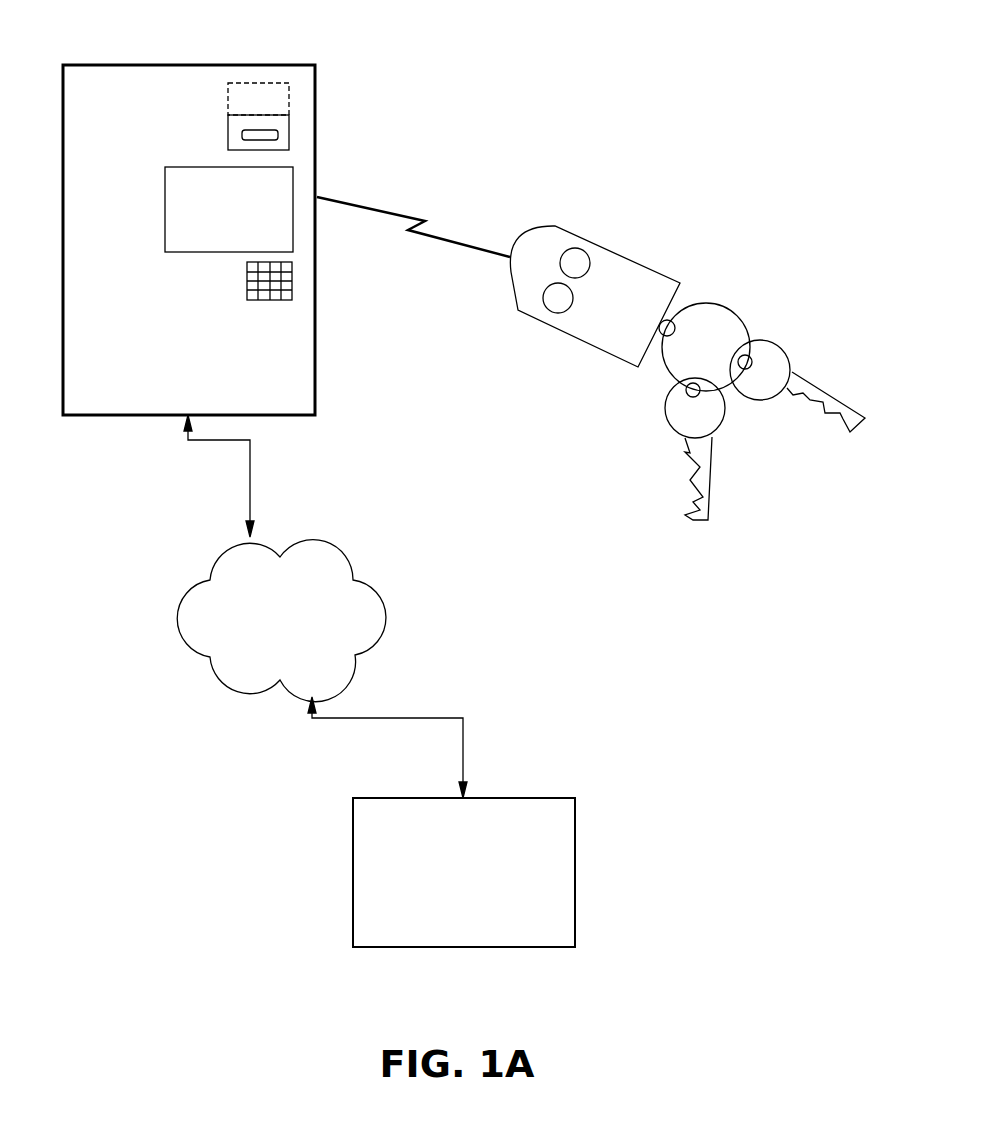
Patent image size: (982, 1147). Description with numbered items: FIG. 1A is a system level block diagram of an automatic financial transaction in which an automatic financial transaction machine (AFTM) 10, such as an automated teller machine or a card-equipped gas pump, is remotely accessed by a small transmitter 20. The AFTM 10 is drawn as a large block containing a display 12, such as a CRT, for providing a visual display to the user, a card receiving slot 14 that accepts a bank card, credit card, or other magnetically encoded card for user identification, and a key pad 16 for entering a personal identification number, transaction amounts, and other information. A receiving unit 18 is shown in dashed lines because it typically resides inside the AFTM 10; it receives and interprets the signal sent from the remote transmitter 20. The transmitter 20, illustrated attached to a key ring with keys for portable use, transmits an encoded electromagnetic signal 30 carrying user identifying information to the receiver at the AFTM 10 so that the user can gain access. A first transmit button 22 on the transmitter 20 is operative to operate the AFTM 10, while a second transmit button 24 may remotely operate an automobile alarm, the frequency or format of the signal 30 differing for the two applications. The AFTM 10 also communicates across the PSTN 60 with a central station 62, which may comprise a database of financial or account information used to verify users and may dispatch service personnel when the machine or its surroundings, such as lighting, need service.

The automatic financial transaction machine (AFTM) 10 is at (316, 363).
The display 12 is at (177, 253).
The card receiving slot 14 is at (242, 134).
The key pad 16 is at (257, 300).
The receiving unit 18 is at (228, 98).
The transmitter 20 is at (587, 342).
The transmit button 22 is at (552, 300).
The second transmit button 24 is at (570, 260).
The electromagnetic signal 30 is at (447, 245).
The PSTN 60 is at (373, 582).
The central station 62 is at (510, 798).